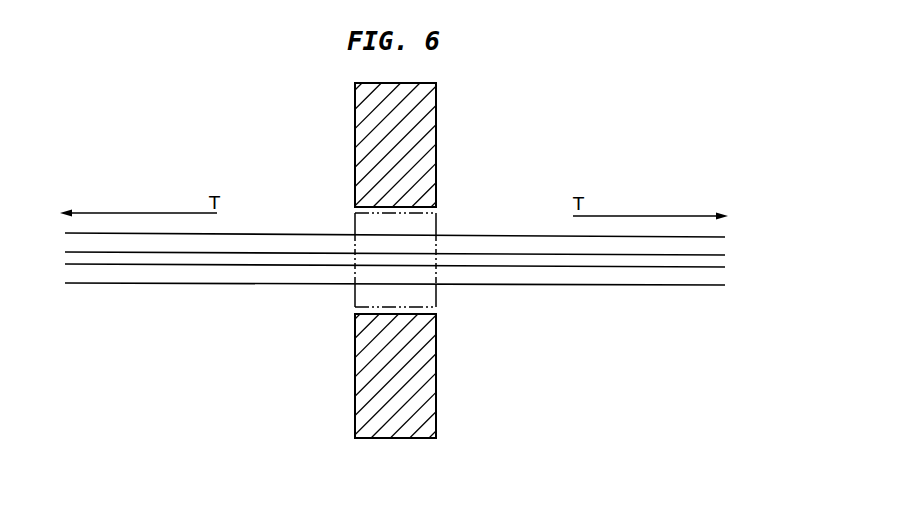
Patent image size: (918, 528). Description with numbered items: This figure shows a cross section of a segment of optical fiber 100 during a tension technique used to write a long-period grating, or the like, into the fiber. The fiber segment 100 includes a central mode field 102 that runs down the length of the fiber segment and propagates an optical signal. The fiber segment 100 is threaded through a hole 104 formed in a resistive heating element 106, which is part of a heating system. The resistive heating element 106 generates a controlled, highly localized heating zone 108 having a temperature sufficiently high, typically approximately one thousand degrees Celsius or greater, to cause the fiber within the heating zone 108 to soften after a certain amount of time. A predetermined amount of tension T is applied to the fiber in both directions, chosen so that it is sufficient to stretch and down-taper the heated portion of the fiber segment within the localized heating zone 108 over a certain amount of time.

The optical fiber segment 100 is at (742, 230).
The central mode field 102 is at (693, 267).
The hole 104 is at (432, 307).
The resistive heating element 106 is at (432, 123).
The heating zone 108 is at (436, 232).